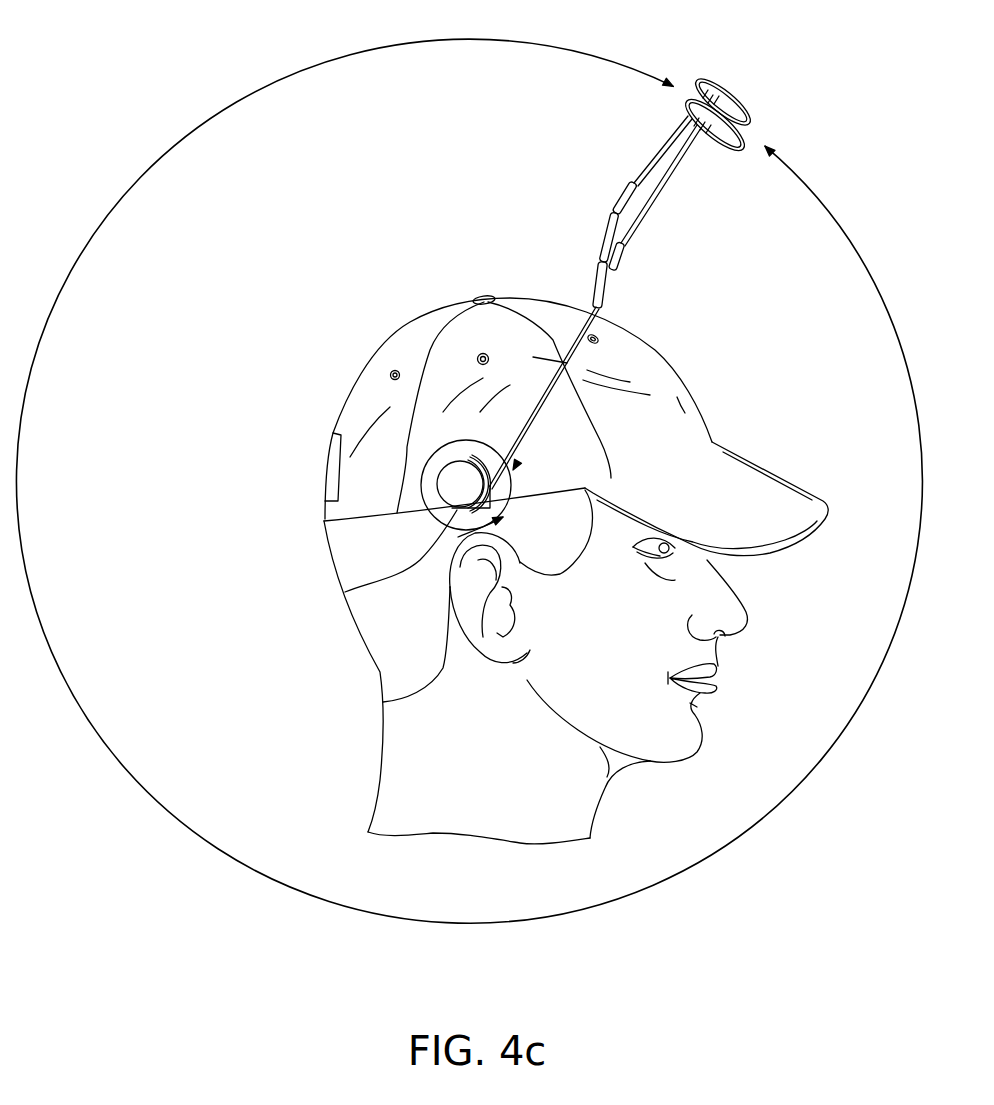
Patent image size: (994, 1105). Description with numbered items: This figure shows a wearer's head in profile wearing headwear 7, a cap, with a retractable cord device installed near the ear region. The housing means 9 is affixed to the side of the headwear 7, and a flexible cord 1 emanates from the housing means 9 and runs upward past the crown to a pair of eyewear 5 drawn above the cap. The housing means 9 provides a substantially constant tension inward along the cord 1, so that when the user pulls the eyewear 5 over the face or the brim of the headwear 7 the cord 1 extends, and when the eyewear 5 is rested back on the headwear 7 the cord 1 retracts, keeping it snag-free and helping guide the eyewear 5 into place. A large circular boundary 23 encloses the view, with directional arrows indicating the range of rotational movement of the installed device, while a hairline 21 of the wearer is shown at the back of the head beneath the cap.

The cord 1 is at (583, 336).
The eyewear 5 is at (694, 86).
The headwear 7 is at (407, 338).
The housing means 9 is at (453, 478).
The wearer's head 21 is at (345, 592).
The enlarged detail circle 23 is at (248, 95).